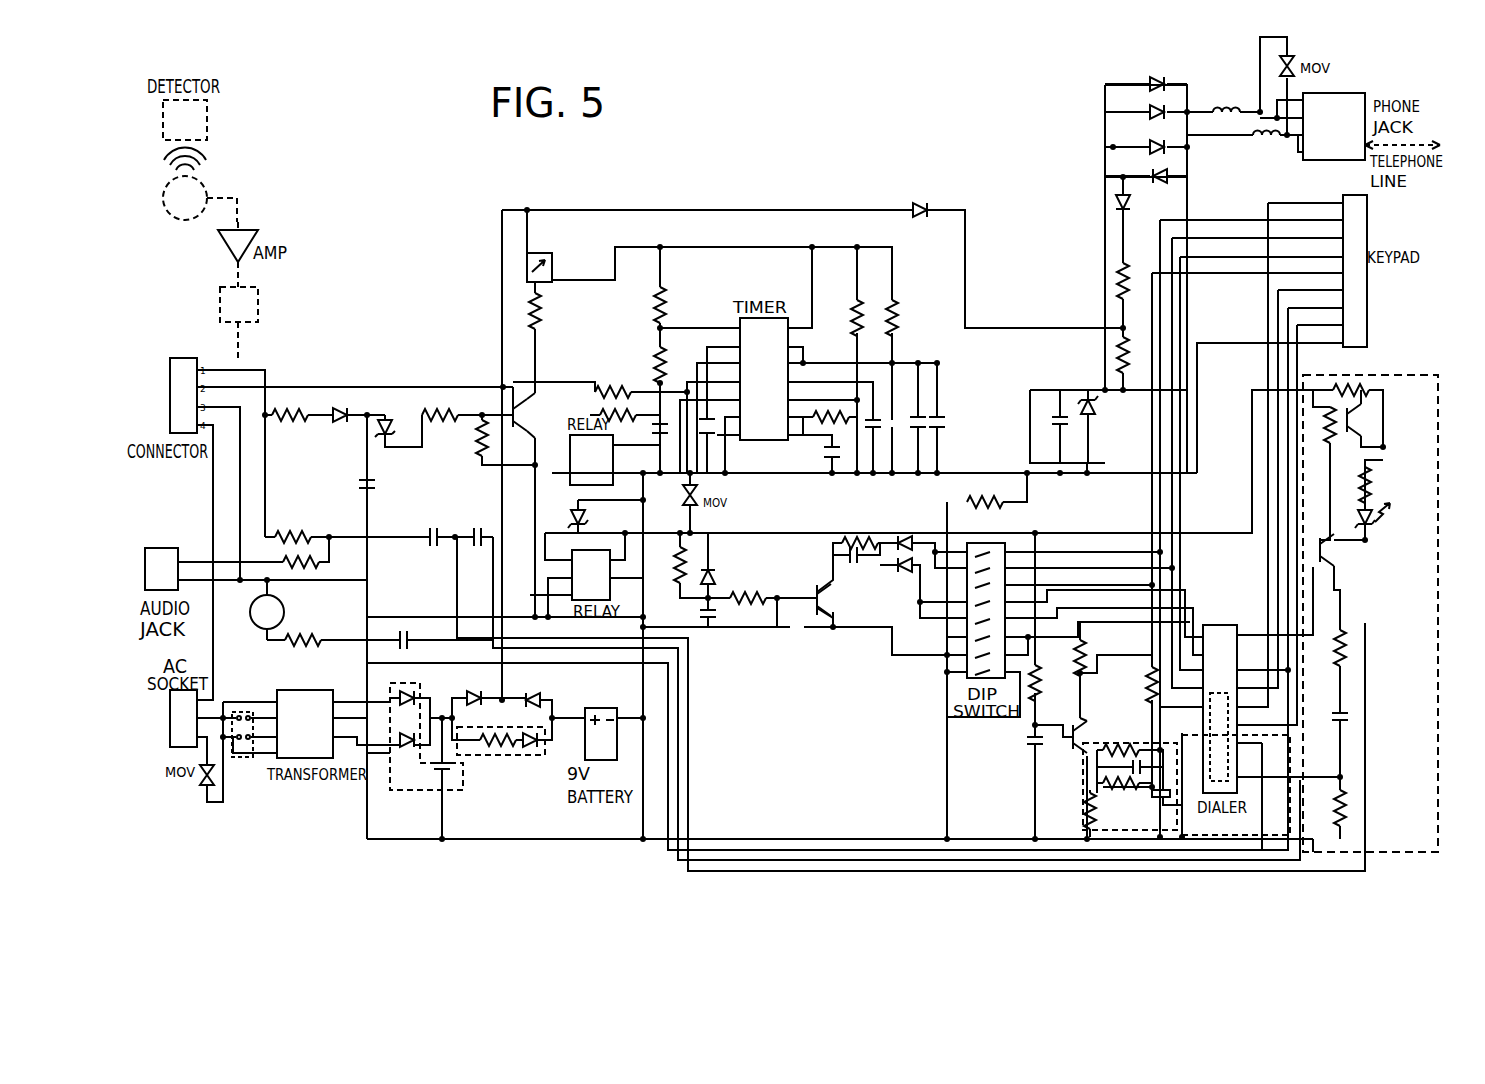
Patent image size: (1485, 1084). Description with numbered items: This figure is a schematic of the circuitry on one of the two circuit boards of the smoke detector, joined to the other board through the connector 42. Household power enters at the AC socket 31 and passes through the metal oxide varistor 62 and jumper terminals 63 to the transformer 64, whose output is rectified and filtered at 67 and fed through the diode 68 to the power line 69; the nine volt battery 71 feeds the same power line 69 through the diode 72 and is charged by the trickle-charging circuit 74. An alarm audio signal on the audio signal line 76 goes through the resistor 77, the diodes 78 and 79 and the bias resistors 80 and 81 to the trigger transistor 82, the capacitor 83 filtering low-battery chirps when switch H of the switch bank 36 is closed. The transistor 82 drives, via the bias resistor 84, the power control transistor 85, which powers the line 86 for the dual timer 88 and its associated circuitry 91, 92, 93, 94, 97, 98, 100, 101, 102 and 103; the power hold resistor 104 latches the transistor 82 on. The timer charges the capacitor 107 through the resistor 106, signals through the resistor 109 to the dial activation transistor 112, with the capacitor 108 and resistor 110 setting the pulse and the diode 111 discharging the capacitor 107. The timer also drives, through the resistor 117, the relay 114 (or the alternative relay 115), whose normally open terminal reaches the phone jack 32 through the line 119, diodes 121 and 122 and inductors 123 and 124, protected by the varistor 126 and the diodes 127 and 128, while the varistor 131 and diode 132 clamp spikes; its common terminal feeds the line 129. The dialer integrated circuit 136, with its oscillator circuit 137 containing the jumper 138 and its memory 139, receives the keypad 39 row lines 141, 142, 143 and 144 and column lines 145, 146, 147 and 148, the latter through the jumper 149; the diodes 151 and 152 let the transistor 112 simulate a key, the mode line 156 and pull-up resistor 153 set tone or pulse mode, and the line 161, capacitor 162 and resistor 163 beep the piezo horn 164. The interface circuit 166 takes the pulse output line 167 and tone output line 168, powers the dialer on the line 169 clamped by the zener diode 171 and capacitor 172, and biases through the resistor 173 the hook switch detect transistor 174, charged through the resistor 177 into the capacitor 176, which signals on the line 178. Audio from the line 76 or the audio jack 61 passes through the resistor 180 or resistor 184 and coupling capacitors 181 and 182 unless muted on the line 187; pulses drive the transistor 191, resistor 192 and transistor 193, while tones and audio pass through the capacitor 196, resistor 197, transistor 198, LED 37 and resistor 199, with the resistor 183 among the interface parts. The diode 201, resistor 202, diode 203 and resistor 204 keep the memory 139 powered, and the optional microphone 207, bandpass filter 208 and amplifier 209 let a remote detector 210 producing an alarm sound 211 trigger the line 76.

The AC socket 31 is at (172, 716).
The phone jack 32 is at (1350, 92).
The switch bank 36 is at (998, 543).
The LED 37 is at (1394, 503).
The keypad 39 is at (1360, 215).
The connector 42 is at (190, 357).
The audio jack 61 is at (160, 548).
The metal oxide varistor 62 is at (200, 790).
The jumper terminals 63 is at (248, 765).
The transformer 64 is at (308, 705).
The rectifier/filter 67 is at (398, 793).
The diode 68 is at (470, 692).
The power line 69 is at (530, 696).
The nine volt battery 71 is at (592, 708).
The diode 72 is at (542, 697).
The trickle-charging circuit 74 is at (510, 757).
The audio signal line 76 is at (280, 386).
The resistor 77 is at (290, 421).
The diode 78 is at (344, 423).
The diode 79 is at (390, 425).
The bias resistor 80 is at (443, 421).
The bias resistor 81 is at (477, 450).
The transistor 82 is at (518, 432).
The capacitor 83 is at (372, 488).
The bias resistor 84 is at (545, 310).
The power control transistor 85 is at (538, 250).
The power line 86 is at (635, 247).
The dual timer 88 is at (790, 316).
The associated circuitry 91 is at (705, 437).
The associated circuitry 92 is at (656, 446).
The associated circuitry 93 is at (655, 360).
The associated circuitry 94 is at (655, 302).
The associated circuitry 97 is at (860, 300).
The associated circuitry 98 is at (895, 300).
The associated circuitry 100 is at (843, 452).
The associated circuitry 101 is at (832, 432).
The associated circuitry 102 is at (890, 418).
The associated circuitry 103 is at (916, 430).
The power hold resistor 104 is at (940, 430).
The resistor 106 is at (684, 594).
The capacitor 107 is at (714, 620).
The capacitor 108 is at (856, 568).
The resistor 109 is at (748, 605).
The resistor 110 is at (880, 541).
The diode 111 is at (713, 575).
The transistor 112 is at (815, 592).
The relay 114 is at (652, 428).
The relay 115 is at (545, 595).
The resistor 117 is at (598, 412).
The line 119 is at (1103, 245).
The diode 121 is at (1160, 80).
The diode 122 is at (1165, 183).
The inductor 123 is at (1222, 108).
The inductor 124 is at (1266, 142).
The metal oxide varistor 126 is at (1293, 56).
The diode 127 is at (1152, 108).
The diode 128 is at (1155, 152).
The line 129 is at (770, 536).
The metal oxide varistor 131 is at (694, 508).
The diode 132 is at (585, 518).
The dialer integrated circuit 136 is at (1196, 804).
The oscillator circuit 137 is at (1105, 745).
The zero ohm jumper 138 is at (1095, 818).
The last number dialed memory 139 is at (1220, 709).
The keypad output line 141 is at (1268, 203).
The keypad output line 142 is at (1278, 315).
The keypad output line 143 is at (1286, 370).
The keypad output line 144 is at (1297, 355).
The keypad output line 145 is at (1190, 320).
The keypad output line 146 is at (1173, 292).
The keypad output line 147 is at (1237, 220).
The keypad output line 148 is at (1150, 515).
The zero ohm jumper 149 is at (1148, 690).
The diode 151 is at (902, 540).
The diode 152 is at (906, 571).
The pull-up resistor 153 is at (985, 502).
The mode line 156 is at (1076, 655).
The line 161 is at (873, 837).
The capacitor 162 is at (410, 645).
The resistor 163 is at (300, 646).
The piezo horn 164 is at (258, 626).
The dialer to phone line interface circuit 166 is at (1430, 375).
The pulse output line 167 is at (1364, 478).
The tone output line 168 is at (1270, 782).
The line 169 is at (1186, 565).
The zener diode 171 is at (1086, 425).
The capacitor 172 is at (1056, 430).
The resistor 173 is at (1040, 680).
The hook switch detect transistor 174 is at (1070, 750).
The capacitor 176 is at (1028, 748).
The resistor 177 is at (1038, 712).
The line 178 is at (1097, 678).
The resistor 180 is at (298, 531).
The coupling capacitor 181 is at (433, 527).
The coupling capacitor 182 is at (479, 527).
The resistor 183 is at (1365, 846).
The resistor 184 is at (322, 567).
The mute signal line 187 is at (668, 850).
The transistor 191 is at (1362, 519).
The resistor 192 is at (1326, 440).
The transistor 193 is at (1357, 406).
The coupling capacitor 196 is at (1350, 720).
The resistor 197 is at (1348, 655).
The transistor 198 is at (1345, 580).
The resistor 199 is at (1370, 485).
The diode 201 is at (920, 203).
The resistor 202 is at (1117, 355).
The diode 203 is at (1130, 203).
The resistor 204 is at (1117, 282).
The microphone 207 is at (205, 190).
The bandpass filter 208 is at (260, 294).
The amplifier 209 is at (256, 238).
The conventional smoke detector 210 is at (207, 128).
The alarm sound 211 is at (214, 153).